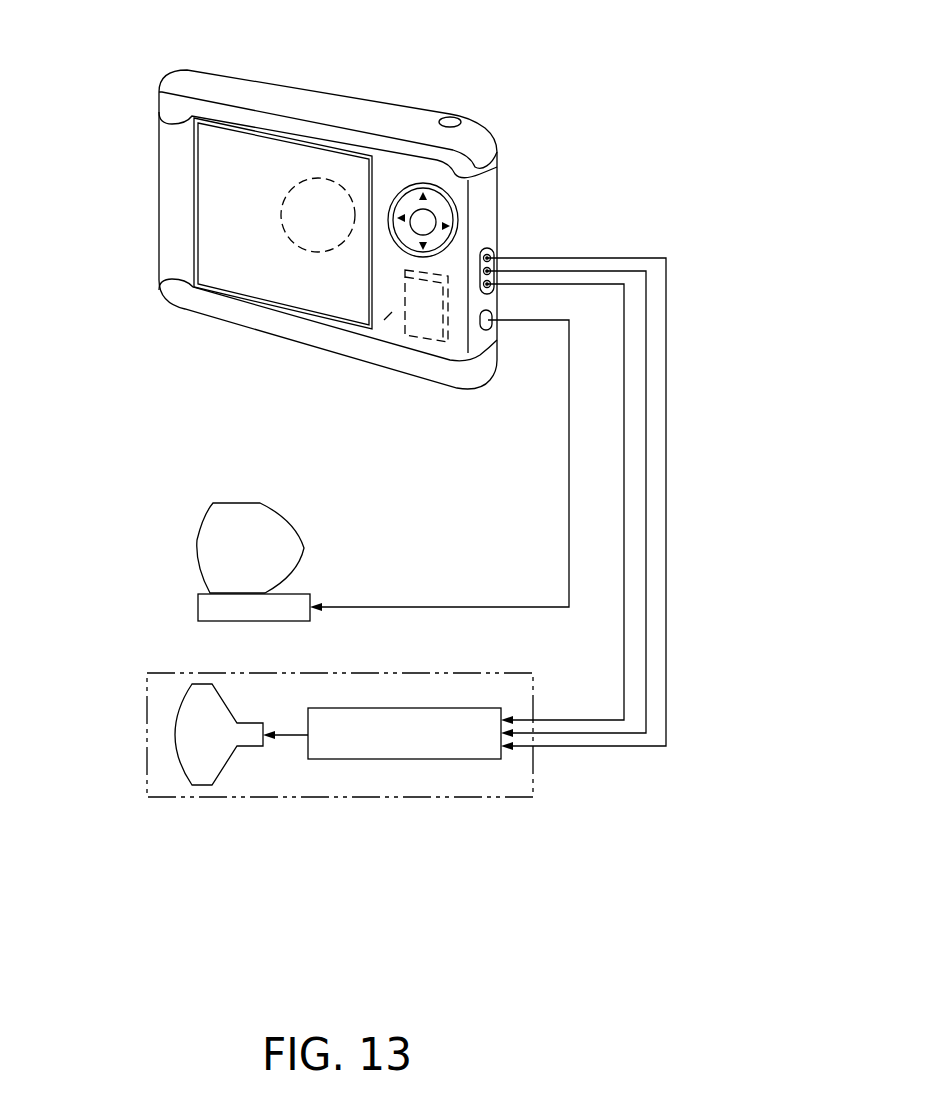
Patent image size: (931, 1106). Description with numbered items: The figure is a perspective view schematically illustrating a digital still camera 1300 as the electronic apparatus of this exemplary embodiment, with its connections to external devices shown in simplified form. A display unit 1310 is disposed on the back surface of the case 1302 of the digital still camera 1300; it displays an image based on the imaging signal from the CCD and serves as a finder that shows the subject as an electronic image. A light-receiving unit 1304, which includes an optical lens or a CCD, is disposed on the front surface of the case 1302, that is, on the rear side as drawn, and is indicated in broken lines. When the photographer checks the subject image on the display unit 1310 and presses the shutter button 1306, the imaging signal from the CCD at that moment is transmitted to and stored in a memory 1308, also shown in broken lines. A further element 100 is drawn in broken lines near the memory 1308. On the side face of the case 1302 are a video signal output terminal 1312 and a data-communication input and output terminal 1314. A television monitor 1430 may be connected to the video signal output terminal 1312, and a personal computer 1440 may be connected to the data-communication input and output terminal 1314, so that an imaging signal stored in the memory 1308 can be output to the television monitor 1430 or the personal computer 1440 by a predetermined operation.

The digital still camera 1300 is at (423, 62).
The case 1302 is at (172, 102).
The light-receiving unit 1304 is at (318, 178).
The shutter button 1306 is at (450, 118).
The memory 1308 is at (423, 327).
The image sensing device 100 is at (388, 315).
The display unit 1310 is at (263, 280).
The video signal output terminal 1312 is at (490, 250).
The data-communication input and output terminal 1314 is at (490, 323).
The personal computer 1440 is at (197, 535).
The television monitor 1430 is at (147, 730).